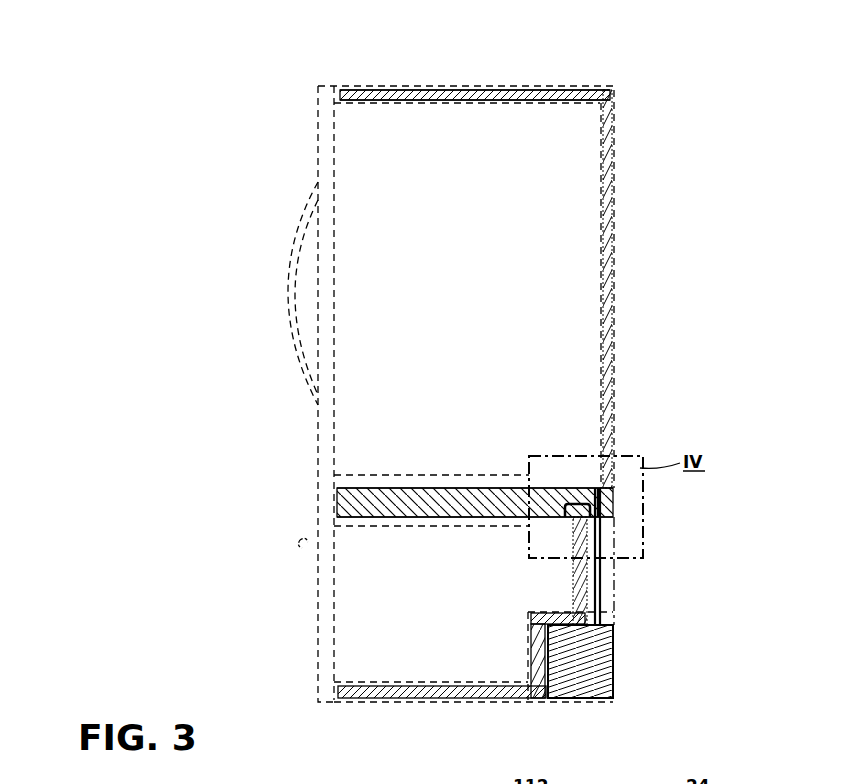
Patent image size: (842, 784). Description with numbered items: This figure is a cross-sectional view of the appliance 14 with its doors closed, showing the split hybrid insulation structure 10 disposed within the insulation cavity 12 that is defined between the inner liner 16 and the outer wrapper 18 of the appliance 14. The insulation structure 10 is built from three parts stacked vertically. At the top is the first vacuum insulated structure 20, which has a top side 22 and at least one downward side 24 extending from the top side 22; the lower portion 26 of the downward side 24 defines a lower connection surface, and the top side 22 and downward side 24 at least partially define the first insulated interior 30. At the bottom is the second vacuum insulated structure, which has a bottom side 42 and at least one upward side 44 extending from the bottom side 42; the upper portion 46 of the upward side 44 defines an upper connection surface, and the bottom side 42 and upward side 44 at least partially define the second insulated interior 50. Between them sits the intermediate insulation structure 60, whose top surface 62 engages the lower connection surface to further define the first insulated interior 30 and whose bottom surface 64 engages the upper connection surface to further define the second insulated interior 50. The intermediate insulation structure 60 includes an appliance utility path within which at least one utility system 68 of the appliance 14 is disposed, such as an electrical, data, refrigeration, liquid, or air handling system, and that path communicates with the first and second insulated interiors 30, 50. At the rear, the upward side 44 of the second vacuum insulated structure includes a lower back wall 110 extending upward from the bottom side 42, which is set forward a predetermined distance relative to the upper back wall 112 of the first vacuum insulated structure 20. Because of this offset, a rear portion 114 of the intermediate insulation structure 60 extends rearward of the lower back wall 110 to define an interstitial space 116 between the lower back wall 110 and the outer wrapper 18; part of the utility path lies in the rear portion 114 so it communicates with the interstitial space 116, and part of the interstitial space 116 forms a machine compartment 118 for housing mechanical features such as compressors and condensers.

The split hybrid insulation structure 10 is at (660, 98).
The insulation cavity 12 is at (362, 80).
The appliance 14 is at (292, 183).
The inner liner 16 is at (345, 104).
The outer wrapper 18 is at (452, 84).
The first vacuum insulated structure 20 is at (534, 84).
The top side 22 is at (547, 100).
The downward side 24 is at (600, 193).
The lower portion 26 is at (366, 462).
The first insulated interior 30 is at (366, 274).
The bottom side 42 is at (425, 699).
The upward side 44 is at (530, 624).
The upper portion 46 is at (366, 538).
The second insulated interior 50 is at (362, 596).
The intermediate insulation structure 60 is at (330, 494).
The top surface 62 is at (402, 488).
The bottom surface 64 is at (405, 517).
The utility system 68 is at (612, 600).
The lower back wall 110 is at (545, 651).
The upper back wall 112 is at (610, 292).
The rear portion 114 is at (620, 482).
The interstitial space 116 is at (612, 530).
The machine compartment 118 is at (595, 705).